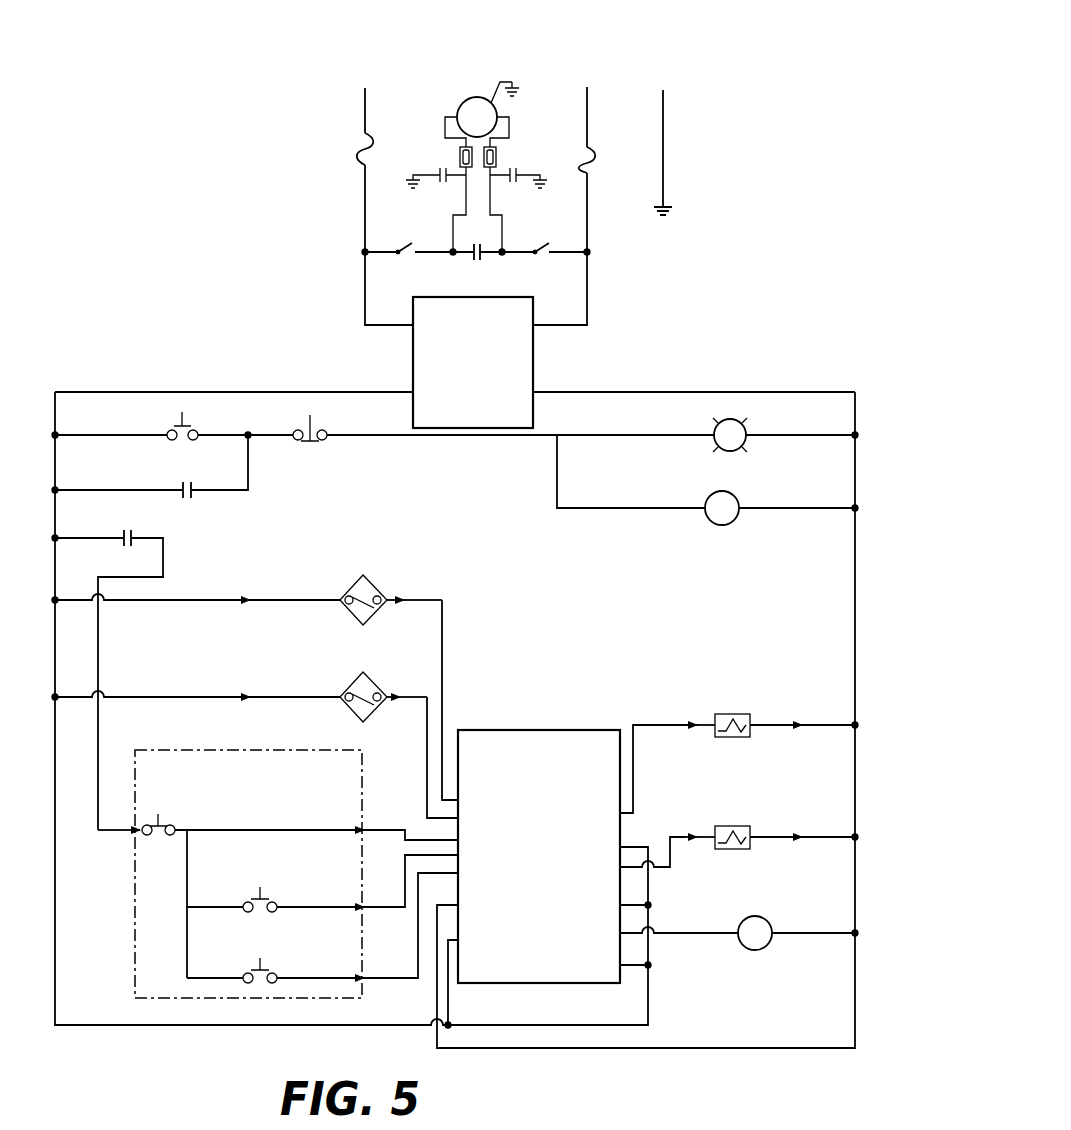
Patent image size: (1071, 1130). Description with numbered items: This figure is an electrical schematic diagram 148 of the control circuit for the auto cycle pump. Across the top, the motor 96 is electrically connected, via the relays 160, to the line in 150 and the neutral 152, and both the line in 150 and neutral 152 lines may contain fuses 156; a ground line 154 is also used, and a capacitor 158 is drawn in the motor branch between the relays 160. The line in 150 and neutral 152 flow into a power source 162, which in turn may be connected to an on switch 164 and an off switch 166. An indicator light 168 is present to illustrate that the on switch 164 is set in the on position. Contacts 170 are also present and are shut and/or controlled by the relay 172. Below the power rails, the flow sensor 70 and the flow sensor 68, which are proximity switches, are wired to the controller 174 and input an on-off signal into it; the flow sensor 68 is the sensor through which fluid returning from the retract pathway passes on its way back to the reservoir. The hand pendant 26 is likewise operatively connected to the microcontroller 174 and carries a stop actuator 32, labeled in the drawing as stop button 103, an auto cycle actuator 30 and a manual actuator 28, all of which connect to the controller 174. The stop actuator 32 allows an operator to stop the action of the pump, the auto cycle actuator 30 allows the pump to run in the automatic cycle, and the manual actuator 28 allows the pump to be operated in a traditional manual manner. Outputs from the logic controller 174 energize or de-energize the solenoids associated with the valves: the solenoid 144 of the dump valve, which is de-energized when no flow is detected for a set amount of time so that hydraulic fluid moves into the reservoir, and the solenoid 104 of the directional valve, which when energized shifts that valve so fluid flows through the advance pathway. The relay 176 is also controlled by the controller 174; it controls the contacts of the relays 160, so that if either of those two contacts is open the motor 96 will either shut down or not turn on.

The electrical schematic diagram 148 is at (190, 120).
The line in 150 is at (365, 113).
The neutral 152 is at (585, 104).
The ground line 154 is at (663, 135).
The fuses 156 is at (365, 160).
The motor 96 is at (464, 100).
The capacitor C2 158 is at (484, 258).
The relays 160 is at (398, 260).
The power source 162 is at (533, 372).
The on switch 164 is at (188, 403).
The off switch 166 is at (326, 440).
The indicator light 168 is at (712, 428).
The contacts 170 is at (192, 494).
The relay 172 is at (735, 521).
The flow sensor 70 is at (377, 586).
The flow sensor 68 is at (377, 683).
The hand pendant 26 is at (226, 751).
The stop actuator 32 is at (167, 821).
The stop button 103 is at (176, 815).
The auto cycle actuator 30 is at (250, 899).
The manual actuator 28 is at (250, 972).
The controller 174 is at (533, 730).
The solenoid 144 is at (750, 736).
The solenoid 104 is at (752, 847).
The relay 176 is at (765, 947).